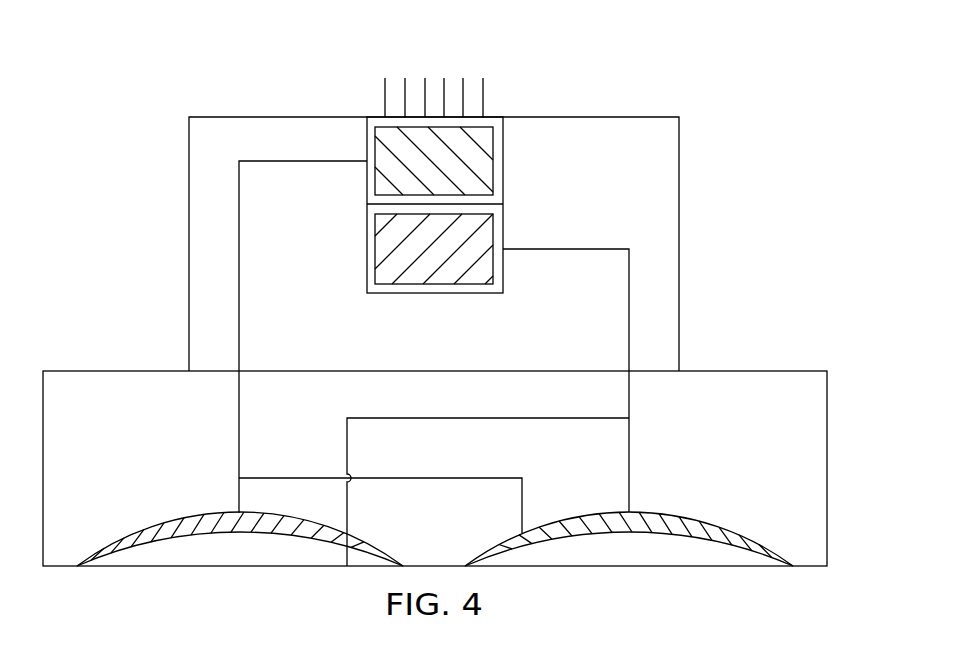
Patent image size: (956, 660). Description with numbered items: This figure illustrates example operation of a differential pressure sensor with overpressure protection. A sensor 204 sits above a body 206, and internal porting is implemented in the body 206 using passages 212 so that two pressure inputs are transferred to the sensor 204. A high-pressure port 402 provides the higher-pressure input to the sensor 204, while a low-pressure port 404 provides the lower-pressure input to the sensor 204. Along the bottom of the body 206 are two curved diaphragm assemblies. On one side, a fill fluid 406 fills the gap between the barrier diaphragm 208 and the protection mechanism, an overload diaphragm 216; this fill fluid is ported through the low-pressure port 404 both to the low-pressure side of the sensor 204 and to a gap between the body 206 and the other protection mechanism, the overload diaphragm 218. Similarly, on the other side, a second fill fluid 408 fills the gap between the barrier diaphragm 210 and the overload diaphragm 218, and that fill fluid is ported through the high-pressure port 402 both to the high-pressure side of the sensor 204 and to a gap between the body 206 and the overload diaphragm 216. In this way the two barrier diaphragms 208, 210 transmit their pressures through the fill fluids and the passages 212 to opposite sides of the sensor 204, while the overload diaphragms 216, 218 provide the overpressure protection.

The sensor 204 is at (367, 99).
The body 206 is at (126, 367).
The barrier diaphragm 208 is at (240, 541).
The barrier diaphragm 210 is at (629, 540).
The passages 212 is at (207, 439).
The protection mechanism (overload diaphragm) 216 is at (203, 512).
The protection mechanism (overload diaphragm) 218 is at (652, 515).
The high-pressure port 402 is at (567, 248).
The low-pressure port 404 is at (241, 272).
The fill fluid 406 is at (258, 531).
The second lens coating 408 is at (665, 528).